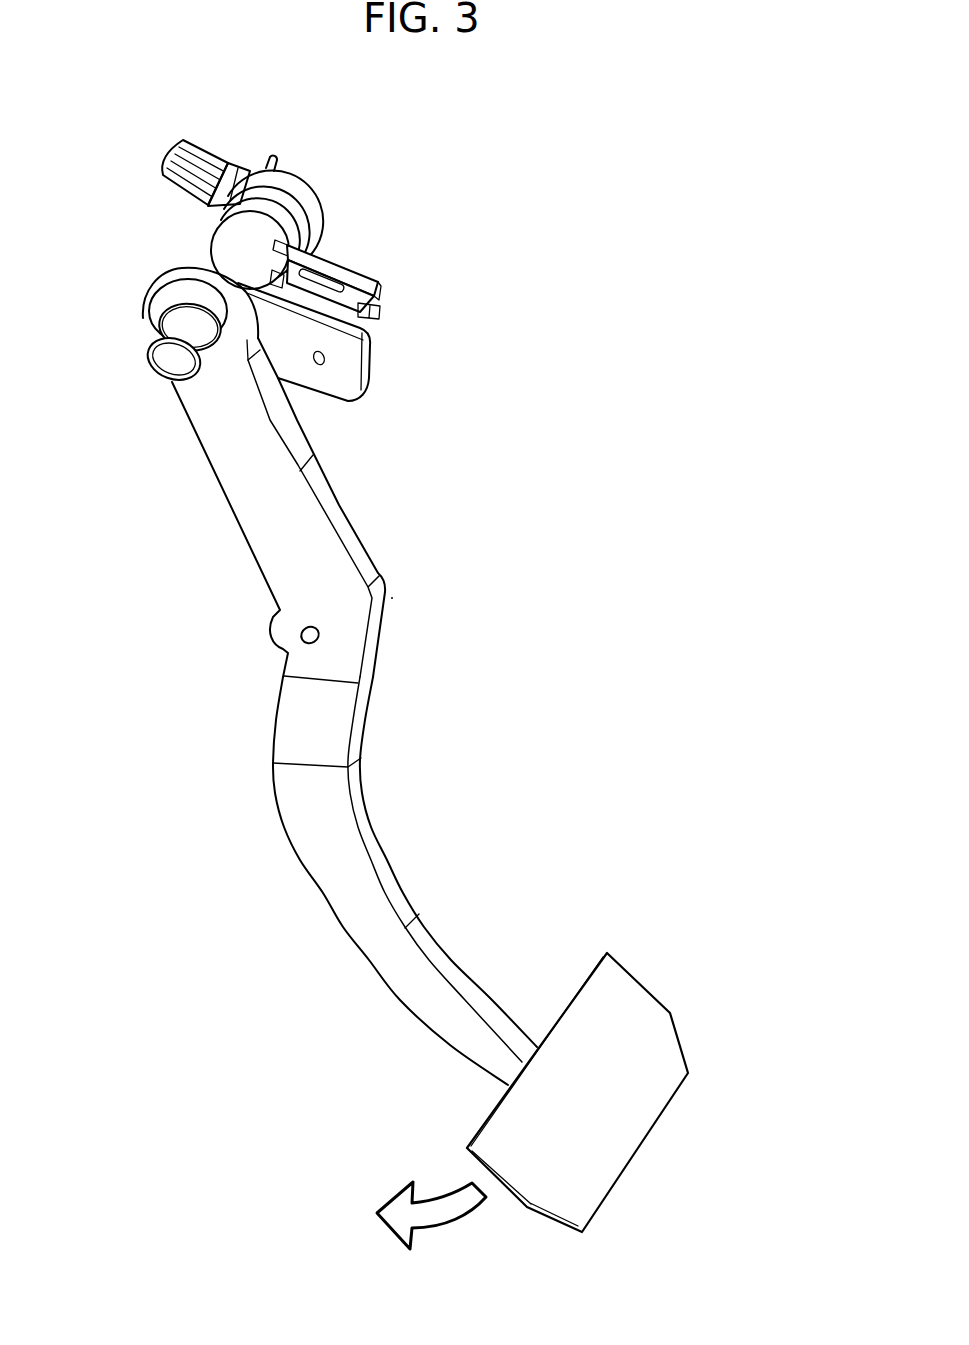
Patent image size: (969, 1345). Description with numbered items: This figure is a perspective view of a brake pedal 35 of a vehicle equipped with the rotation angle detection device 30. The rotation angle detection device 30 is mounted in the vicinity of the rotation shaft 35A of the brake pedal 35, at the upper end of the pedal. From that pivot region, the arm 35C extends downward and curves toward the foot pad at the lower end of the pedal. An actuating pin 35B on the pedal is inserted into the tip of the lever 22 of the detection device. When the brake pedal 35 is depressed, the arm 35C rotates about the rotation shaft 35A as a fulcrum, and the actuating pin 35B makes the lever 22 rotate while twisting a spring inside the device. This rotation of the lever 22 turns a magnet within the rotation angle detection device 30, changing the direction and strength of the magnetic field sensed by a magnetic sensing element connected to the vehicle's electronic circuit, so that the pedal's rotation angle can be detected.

The rotation angle detection device 30 is at (300, 183).
The lever 22 is at (351, 272).
The brake pedal 35 is at (638, 1000).
The rotation shaft 35A is at (165, 360).
The actuating pin 35B is at (350, 314).
The arm 35C is at (292, 790).